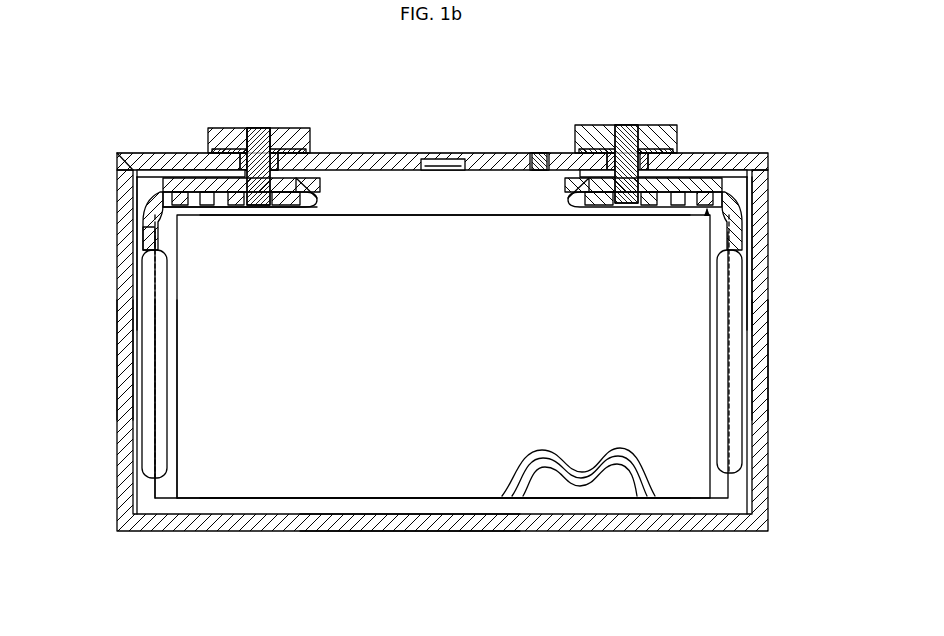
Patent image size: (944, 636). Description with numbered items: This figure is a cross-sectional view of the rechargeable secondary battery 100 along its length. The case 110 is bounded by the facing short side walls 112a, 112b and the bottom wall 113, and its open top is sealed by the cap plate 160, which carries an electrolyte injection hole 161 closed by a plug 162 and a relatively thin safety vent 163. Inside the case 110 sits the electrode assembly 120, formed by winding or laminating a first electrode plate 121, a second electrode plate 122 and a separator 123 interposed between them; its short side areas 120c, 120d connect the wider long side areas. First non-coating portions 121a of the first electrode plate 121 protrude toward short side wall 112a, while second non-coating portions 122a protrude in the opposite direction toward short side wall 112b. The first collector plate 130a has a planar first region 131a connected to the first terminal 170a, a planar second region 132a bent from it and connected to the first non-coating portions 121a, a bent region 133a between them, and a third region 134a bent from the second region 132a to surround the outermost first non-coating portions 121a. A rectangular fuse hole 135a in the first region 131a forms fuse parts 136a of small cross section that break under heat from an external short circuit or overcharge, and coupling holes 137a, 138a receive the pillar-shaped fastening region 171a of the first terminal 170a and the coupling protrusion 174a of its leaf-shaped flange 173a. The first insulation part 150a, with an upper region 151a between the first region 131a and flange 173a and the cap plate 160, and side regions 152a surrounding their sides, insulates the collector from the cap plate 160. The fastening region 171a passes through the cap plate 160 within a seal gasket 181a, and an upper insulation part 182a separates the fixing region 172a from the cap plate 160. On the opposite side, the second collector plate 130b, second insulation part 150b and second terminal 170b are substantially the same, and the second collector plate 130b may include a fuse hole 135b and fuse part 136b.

The rechargeable secondary battery 100 is at (793, 106).
The case 110 is at (770, 470).
The short side wall 112a is at (118, 420).
The short side wall 112b is at (770, 378).
The bottom wall 113 is at (343, 532).
The electrode assembly 120 is at (440, 398).
The short side area 120c is at (442, 208).
The short side area 120d is at (424, 500).
The first electrode plate 121 is at (545, 458).
The first non-coating portion 121a is at (171, 500).
The second electrode plate 122 is at (513, 568).
The second non-coating portion 122a is at (716, 500).
The separator 123 is at (589, 462).
The first collector plate 130a is at (134, 278).
The second collector plate 130b is at (753, 252).
The first region 131a is at (196, 206).
The second region 132a is at (178, 209).
The bent region 133a is at (150, 196).
The third region 134a is at (150, 362).
The fuse hole 135a is at (184, 190).
The fuse hole 135b is at (703, 190).
The fuse part 136a is at (143, 248).
The fuse part 136b is at (745, 218).
The coupling hole 137a is at (292, 207).
The coupling hole 138a is at (240, 206).
The first insulation part 150a is at (137, 162).
The second insulation part 150b is at (766, 159).
The upper region 151a is at (160, 168).
The side region 152a is at (140, 175).
The cap plate 160 is at (394, 153).
The electrolyte injection hole 161 is at (533, 153).
The plug 162 is at (545, 153).
The safety vent 163 is at (447, 158).
The first terminal 170a is at (282, 137).
The second terminal 170b is at (659, 116).
The fastening region 171a is at (254, 128).
The fixing region 172a is at (288, 128).
The flange 173a is at (262, 208).
The coupling protrusion 174a is at (214, 206).
The seal gasket 181a is at (312, 200).
The upper insulation part 182a is at (333, 152).